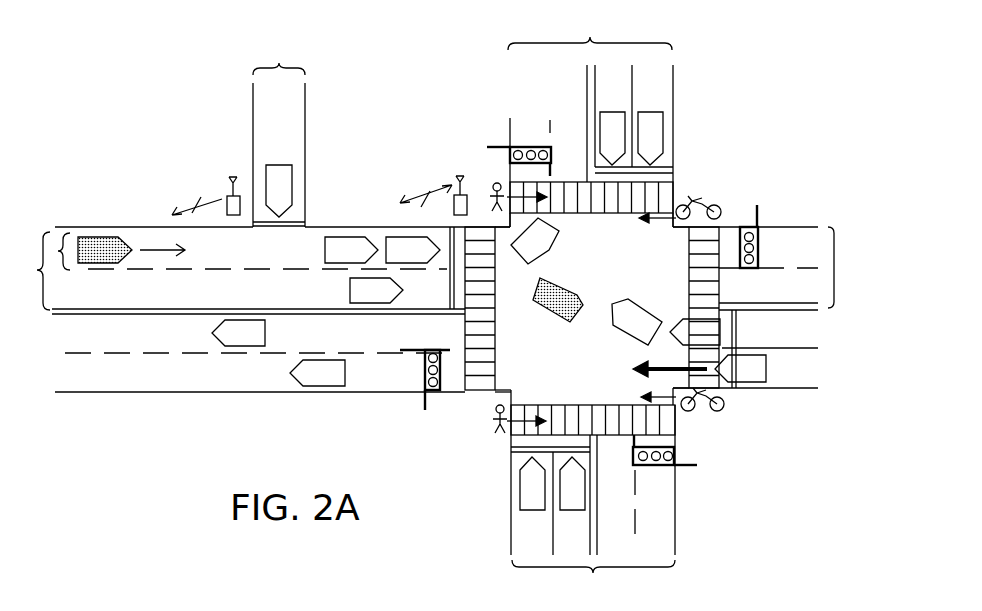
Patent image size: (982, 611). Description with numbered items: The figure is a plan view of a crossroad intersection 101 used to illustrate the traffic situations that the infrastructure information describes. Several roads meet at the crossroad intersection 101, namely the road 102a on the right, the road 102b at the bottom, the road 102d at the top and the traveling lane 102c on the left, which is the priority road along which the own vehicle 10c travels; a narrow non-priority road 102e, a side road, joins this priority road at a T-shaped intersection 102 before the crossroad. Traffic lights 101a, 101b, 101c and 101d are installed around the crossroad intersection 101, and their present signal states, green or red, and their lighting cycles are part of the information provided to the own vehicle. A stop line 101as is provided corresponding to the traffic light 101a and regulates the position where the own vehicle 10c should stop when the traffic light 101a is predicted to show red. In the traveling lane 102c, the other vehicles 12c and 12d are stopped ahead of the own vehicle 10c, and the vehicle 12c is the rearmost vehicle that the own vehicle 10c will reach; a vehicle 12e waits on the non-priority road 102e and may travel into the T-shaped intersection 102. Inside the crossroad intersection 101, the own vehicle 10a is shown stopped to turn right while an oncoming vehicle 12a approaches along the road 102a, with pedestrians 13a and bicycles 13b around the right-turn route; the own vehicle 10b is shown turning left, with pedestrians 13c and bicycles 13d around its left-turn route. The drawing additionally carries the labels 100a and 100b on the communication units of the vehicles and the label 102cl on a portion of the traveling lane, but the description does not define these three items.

The own vehicle 10a is at (553, 311).
The own vehicle 10b is at (537, 236).
The own vehicle 10c is at (104, 237).
The oncoming vehicle 12a is at (768, 369).
The other vehicle 12c is at (334, 239).
The other vehicle 12d is at (389, 241).
The vehicle 12e is at (287, 185).
The pedestrian 13a is at (497, 443).
The bicycle 13b is at (725, 419).
The pedestrian 13c is at (489, 176).
The bicycle 13d is at (706, 191).
The in-vehicle communication device 100a is at (468, 193).
The in-vehicle communication device 100b is at (236, 192).
The crossroad intersection 101 is at (664, 258).
The traffic light 101a is at (760, 246).
The traffic light 101b is at (652, 466).
The traffic light 101c is at (424, 386).
The traffic light 101d is at (511, 146).
The stop line 101as is at (449, 299).
The T-shaped intersection 102 is at (299, 259).
The road 102a is at (838, 308).
The road 102b is at (620, 601).
The traveling lane 102c is at (33, 268).
The lane 102cl is at (57, 250).
The road 102d is at (614, 31).
The non-priority road 102e is at (305, 61).